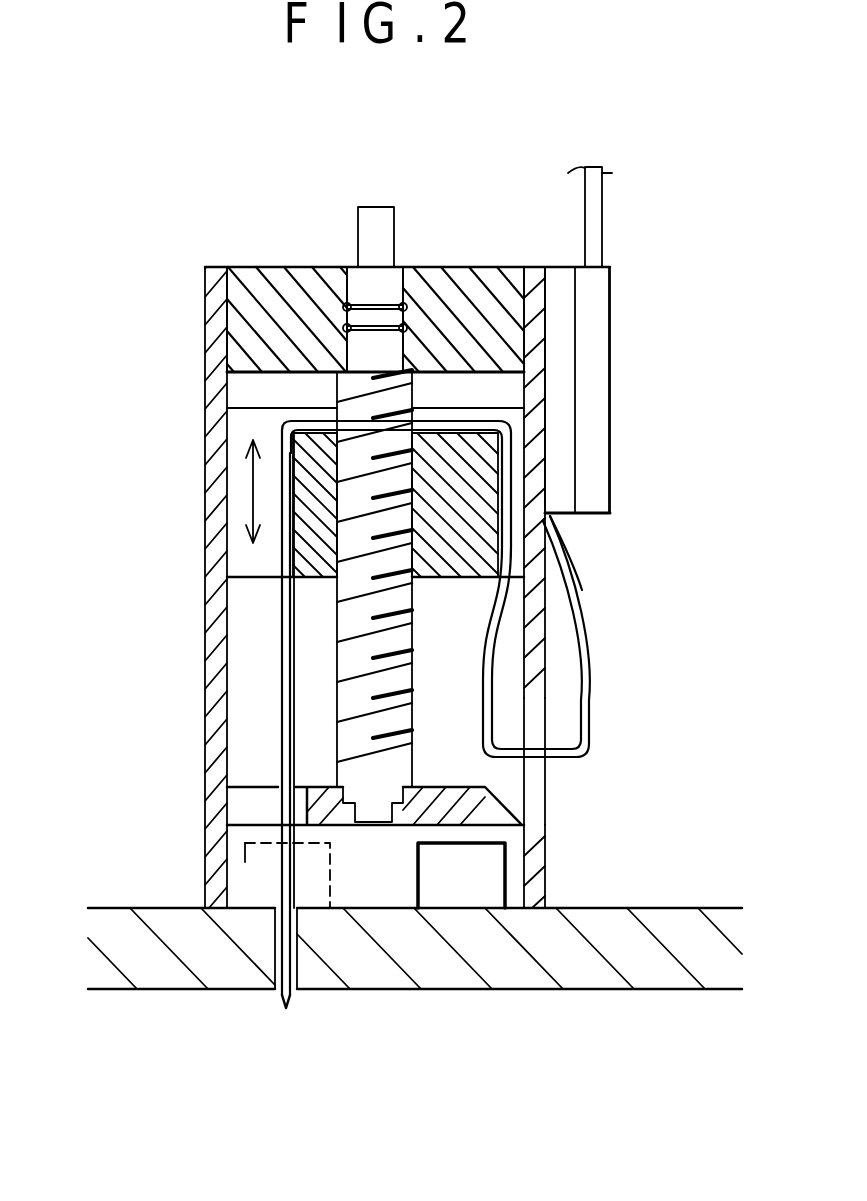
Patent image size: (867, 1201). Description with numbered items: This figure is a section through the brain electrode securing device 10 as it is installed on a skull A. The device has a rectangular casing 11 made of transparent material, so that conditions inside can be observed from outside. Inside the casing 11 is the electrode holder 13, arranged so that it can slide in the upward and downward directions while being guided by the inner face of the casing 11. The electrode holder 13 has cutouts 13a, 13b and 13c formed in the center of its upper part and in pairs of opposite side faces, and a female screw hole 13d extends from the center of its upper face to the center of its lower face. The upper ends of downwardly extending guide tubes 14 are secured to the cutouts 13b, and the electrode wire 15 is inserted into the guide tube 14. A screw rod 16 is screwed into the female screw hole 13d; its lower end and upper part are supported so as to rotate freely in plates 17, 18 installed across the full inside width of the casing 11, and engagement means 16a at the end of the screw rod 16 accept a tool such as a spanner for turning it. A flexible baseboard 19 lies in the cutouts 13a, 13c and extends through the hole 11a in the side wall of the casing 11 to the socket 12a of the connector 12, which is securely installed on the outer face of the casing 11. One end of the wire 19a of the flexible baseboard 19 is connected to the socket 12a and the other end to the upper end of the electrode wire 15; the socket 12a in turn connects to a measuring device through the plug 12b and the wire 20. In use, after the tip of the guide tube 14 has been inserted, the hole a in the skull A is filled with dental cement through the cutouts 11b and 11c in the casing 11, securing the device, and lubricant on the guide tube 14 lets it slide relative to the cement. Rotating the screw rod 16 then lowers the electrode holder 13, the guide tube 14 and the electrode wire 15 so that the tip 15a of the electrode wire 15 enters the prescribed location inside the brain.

The brain electrode securing device 10 is at (148, 467).
The casing 11 is at (200, 630).
The hole 11a is at (540, 725).
The cutout 11b is at (245, 870).
The cutout 11c is at (503, 863).
The connector 12 is at (620, 468).
The socket 12a is at (555, 310).
The plug 12b is at (585, 350).
The electrode holder 13 is at (318, 540).
The cutout 13a is at (478, 430).
The cutout 13b is at (283, 453).
The cutout 13c is at (503, 450).
The female screw hole 13d is at (404, 545).
The guide tube 14 is at (283, 665).
The electrode wire 15 is at (283, 760).
The tip (electrode) 15a is at (290, 1000).
The screw rod 16 is at (348, 727).
The engagement means 16a is at (378, 223).
The plate 17 is at (495, 810).
The plate 18 is at (250, 277).
The flexible baseboard 19 is at (598, 578).
The wire 19a is at (560, 537).
The wire 20 is at (595, 210).
The skull A is at (656, 922).
The hole a is at (262, 975).